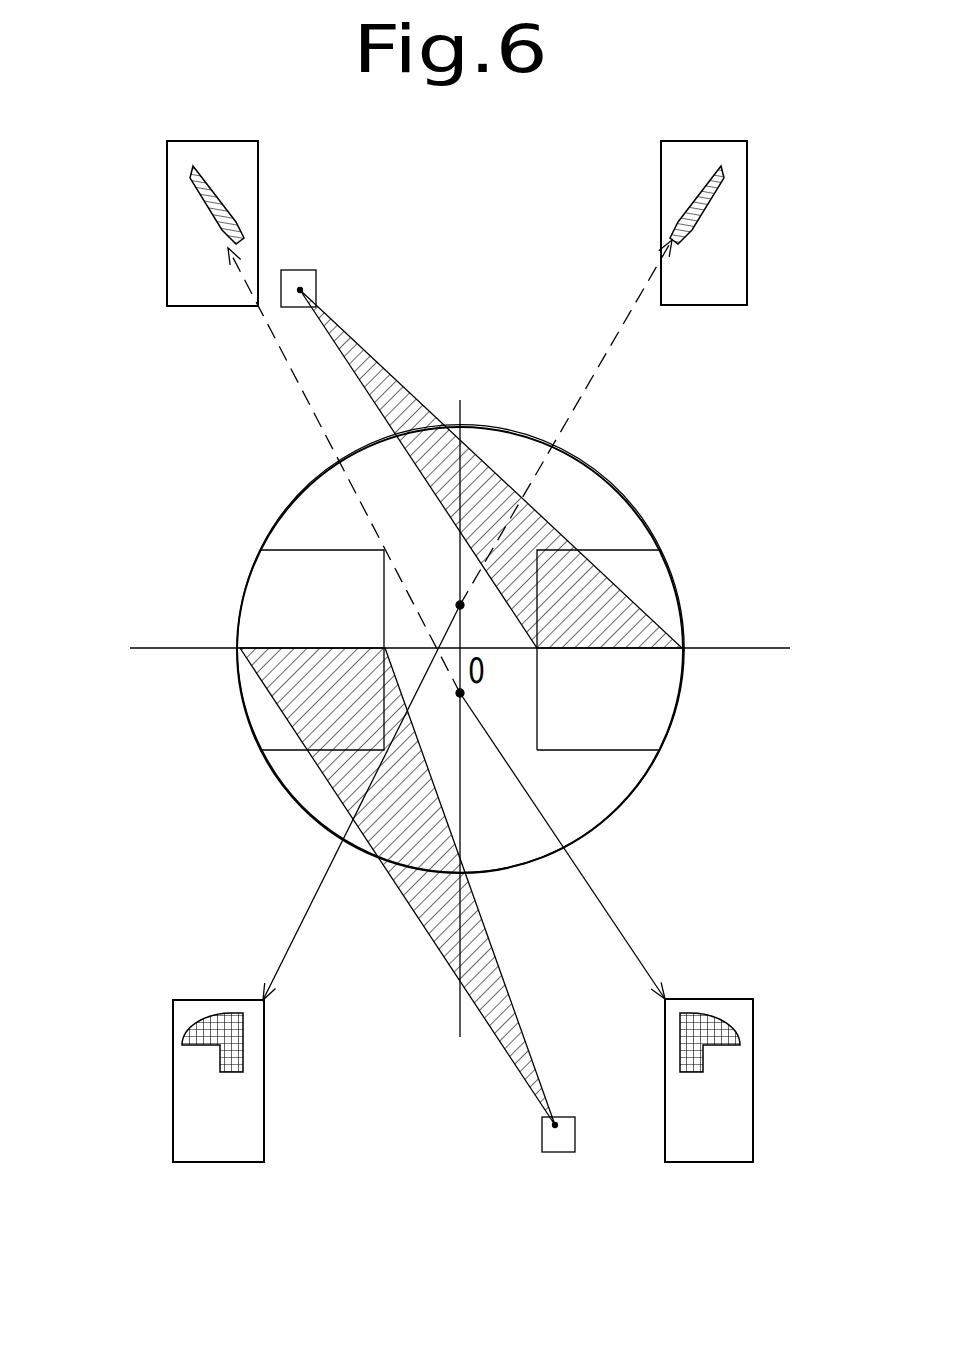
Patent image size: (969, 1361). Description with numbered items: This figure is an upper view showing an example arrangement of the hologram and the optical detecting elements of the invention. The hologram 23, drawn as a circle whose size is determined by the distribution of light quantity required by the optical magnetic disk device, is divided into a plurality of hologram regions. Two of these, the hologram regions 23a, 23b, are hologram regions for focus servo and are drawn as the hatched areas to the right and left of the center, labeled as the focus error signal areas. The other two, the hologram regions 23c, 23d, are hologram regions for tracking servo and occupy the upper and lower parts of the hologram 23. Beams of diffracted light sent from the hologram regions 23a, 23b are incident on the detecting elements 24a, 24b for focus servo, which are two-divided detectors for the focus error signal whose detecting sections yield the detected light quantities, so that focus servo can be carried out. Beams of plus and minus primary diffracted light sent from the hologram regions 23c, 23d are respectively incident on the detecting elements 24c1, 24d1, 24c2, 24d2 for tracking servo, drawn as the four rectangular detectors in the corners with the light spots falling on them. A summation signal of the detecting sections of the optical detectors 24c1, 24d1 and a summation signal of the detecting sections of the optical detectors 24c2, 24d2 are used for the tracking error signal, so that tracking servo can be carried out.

The hologram 23 is at (658, 515).
The hologram region for focus servo 23a is at (650, 577).
The hologram region for focus servo 23b is at (262, 561).
The hologram region for tracking servo 23c is at (510, 447).
The hologram region for tracking servo 23d is at (522, 838).
The detecting element for focus servo 24a is at (303, 276).
The detecting element for focus servo 24b is at (557, 1152).
The detecting element for tracking servo 24c1 is at (732, 225).
The detecting element for tracking servo 24c2 is at (175, 236).
The detecting element for tracking servo 24d1 is at (243, 1136).
The detecting element for tracking servo 24d2 is at (737, 1140).